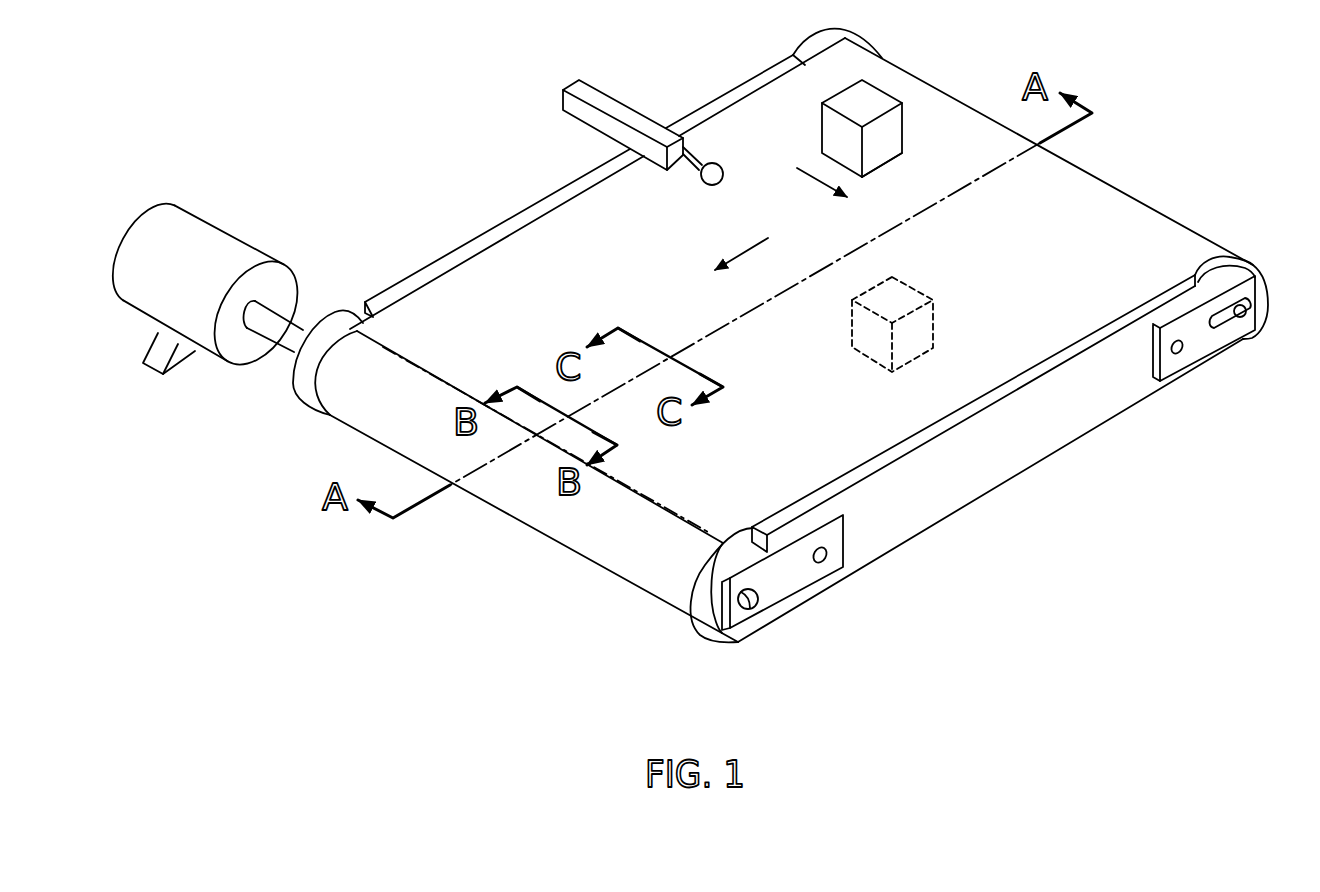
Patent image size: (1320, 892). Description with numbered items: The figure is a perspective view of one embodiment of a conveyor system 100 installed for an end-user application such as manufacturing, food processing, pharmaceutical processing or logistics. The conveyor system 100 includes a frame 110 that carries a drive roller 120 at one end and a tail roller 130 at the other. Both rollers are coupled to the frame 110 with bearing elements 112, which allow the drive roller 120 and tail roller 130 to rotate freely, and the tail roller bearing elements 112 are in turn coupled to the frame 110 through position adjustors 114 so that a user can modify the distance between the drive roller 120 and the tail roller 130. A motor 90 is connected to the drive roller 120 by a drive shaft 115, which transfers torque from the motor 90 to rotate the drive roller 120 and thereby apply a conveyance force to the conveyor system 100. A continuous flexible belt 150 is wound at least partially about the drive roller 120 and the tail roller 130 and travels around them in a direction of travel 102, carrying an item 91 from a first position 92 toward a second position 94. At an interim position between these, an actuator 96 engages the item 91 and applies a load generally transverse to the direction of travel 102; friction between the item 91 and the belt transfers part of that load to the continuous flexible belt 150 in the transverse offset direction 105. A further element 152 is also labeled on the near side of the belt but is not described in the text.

The motor 90 is at (167, 210).
The item 91 is at (882, 90).
The first position 92 is at (887, 163).
The second position 94 is at (935, 318).
The actuator 96 is at (583, 80).
The conveyor system 100 is at (480, 148).
The direction of travel 102 is at (743, 250).
The offset direction 105 is at (817, 182).
The frame 110 is at (985, 497).
The bearing elements 112 is at (750, 606).
The position adjustors 114 is at (1230, 345).
The drive shaft 115 is at (301, 320).
The drive roller 120 is at (720, 648).
The tail roller 130 is at (1258, 265).
The continuous flexible belt 150 is at (744, 120).
The side rail 152 is at (1158, 214).